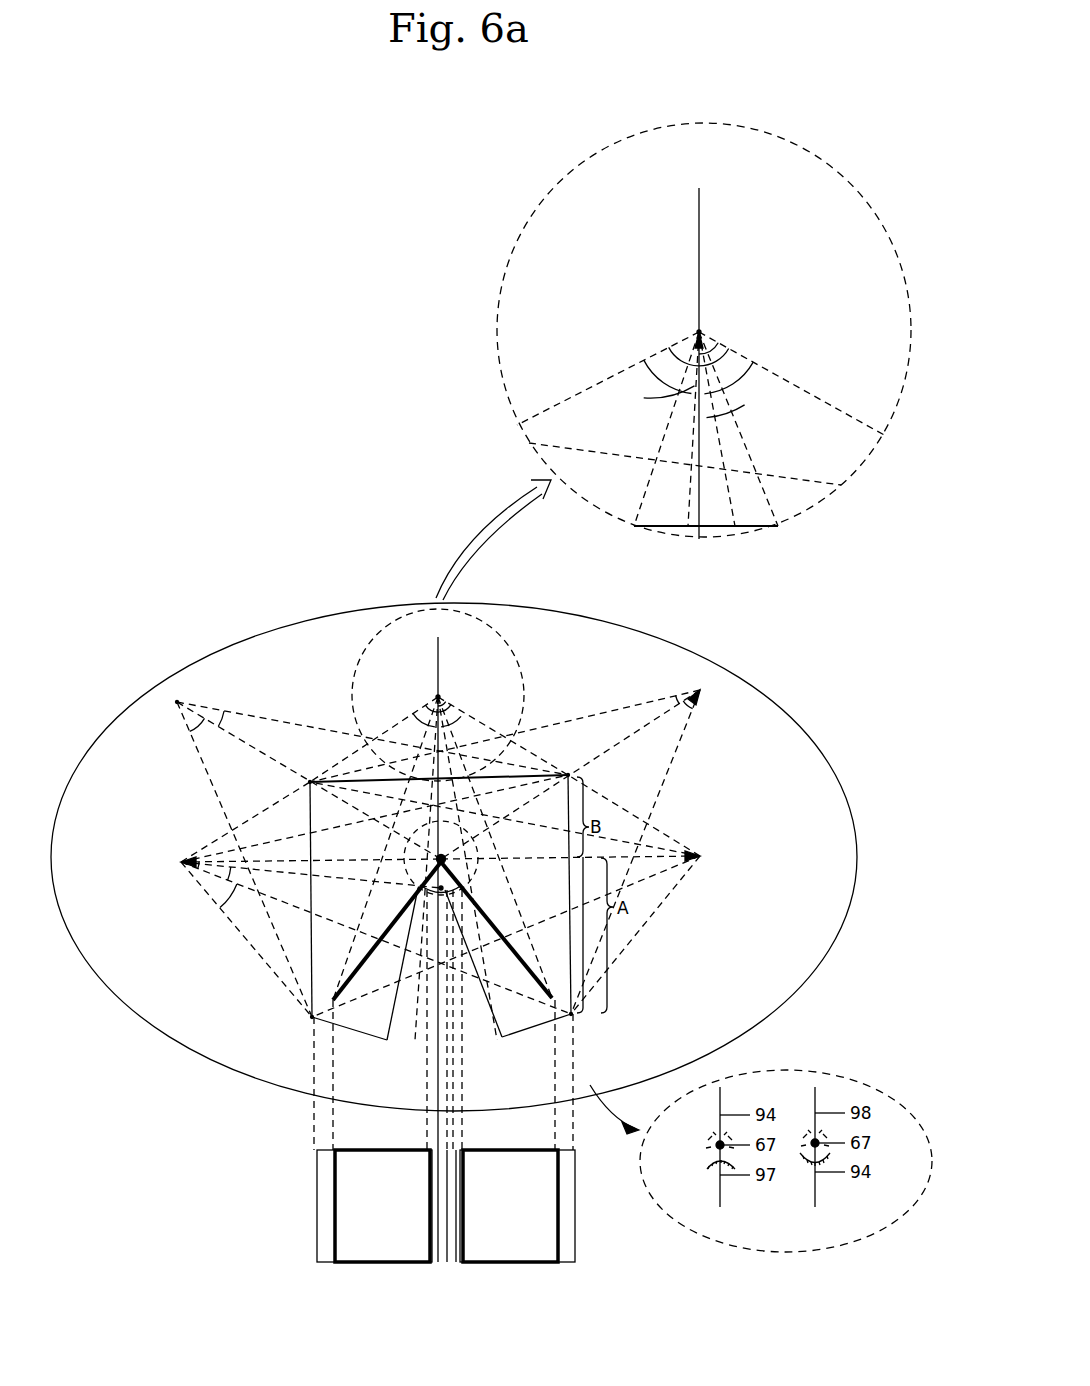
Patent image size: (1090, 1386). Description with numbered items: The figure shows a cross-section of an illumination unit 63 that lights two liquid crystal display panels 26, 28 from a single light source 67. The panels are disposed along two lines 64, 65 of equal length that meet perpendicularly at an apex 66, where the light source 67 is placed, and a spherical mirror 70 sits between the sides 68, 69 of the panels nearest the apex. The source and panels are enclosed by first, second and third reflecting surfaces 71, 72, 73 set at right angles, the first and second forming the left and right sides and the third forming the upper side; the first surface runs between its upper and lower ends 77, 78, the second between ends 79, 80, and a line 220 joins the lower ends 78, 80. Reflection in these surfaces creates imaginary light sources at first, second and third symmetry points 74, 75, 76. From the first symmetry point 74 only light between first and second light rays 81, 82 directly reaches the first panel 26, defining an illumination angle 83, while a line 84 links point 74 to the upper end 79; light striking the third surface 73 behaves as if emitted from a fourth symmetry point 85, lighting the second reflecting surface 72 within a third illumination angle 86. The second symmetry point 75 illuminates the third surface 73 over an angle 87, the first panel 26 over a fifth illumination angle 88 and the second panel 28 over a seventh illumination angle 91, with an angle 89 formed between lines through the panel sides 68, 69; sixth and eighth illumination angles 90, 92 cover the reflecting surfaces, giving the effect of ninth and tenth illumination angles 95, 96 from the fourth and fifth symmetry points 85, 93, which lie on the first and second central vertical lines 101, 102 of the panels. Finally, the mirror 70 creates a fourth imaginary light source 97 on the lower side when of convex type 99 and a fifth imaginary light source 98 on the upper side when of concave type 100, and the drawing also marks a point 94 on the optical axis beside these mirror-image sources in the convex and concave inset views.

The first liquid crystal display panel 26 is at (379, 1062).
The second liquid crystal display panel 28 is at (508, 1062).
The illumination unit 63 is at (750, 680).
The first line 64 is at (401, 974).
The second line 65 is at (520, 1010).
The apex 66 is at (452, 876).
The light source 67 is at (447, 852).
The side of first liquid crystal display panel 68 is at (403, 1285).
The side of second liquid crystal display panel 69 is at (455, 905).
The spherical mirror 70 is at (470, 856).
The first reflecting surface 71 is at (311, 925).
The second reflecting surface 72 is at (570, 895).
The third reflecting surface 73 is at (742, 529).
The first symmetry point 74 is at (173, 862).
The second symmetry point 75 is at (582, 505).
The third symmetry point 76 is at (707, 856).
The upper end of first reflection surface 77 is at (315, 763).
The lower end of first reflection surface 78 is at (312, 1020).
The upper end of second reflection surface 79 is at (570, 761).
The lower end of second reflection surface 80 is at (575, 1015).
The first light ray 81 is at (240, 917).
The second light ray 82 is at (230, 872).
The illumination angle 83 is at (195, 877).
The line 84 is at (228, 850).
The fourth symmetry point 85 is at (167, 694).
The third illumination angle 86 is at (224, 716).
The illumination angle 87 is at (678, 361).
The fifth illumination angle 88 is at (686, 417).
The angle 89 is at (705, 419).
The sixth illumination angle 90 is at (723, 350).
The seventh illumination angle 91 is at (714, 389).
The eighth illumination angle 92 is at (675, 391).
The fifth symmetry point 93 is at (704, 688).
The axis point 94 is at (437, 1013).
The ninth illumination angle 95 is at (198, 727).
The tenth illumination angle 96 is at (687, 713).
The fourth imaginary light source 97 is at (412, 1010).
The fifth imaginary light source 98 is at (456, 812).
The convex type 99 is at (707, 1166).
The concave type 100 is at (830, 1153).
The first central vertical line 101 is at (352, 922).
The second central vertical line 102 is at (545, 910).
The line 220 is at (527, 1020).